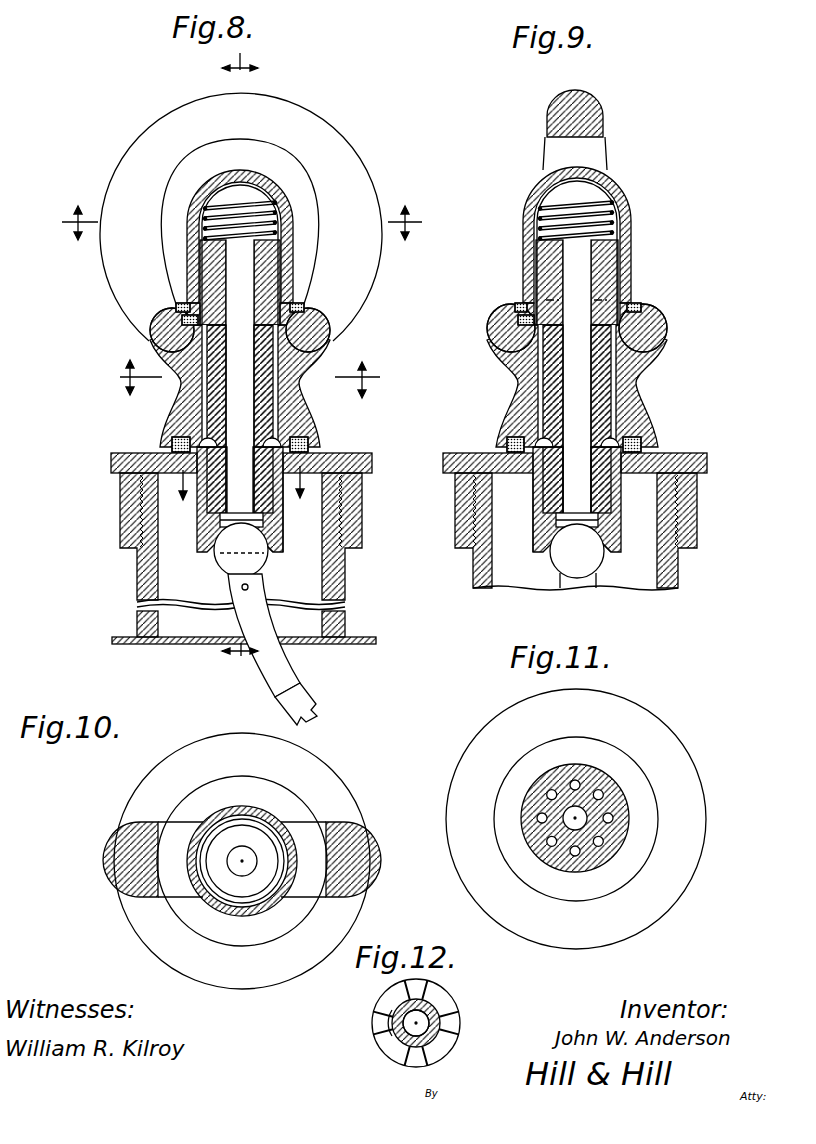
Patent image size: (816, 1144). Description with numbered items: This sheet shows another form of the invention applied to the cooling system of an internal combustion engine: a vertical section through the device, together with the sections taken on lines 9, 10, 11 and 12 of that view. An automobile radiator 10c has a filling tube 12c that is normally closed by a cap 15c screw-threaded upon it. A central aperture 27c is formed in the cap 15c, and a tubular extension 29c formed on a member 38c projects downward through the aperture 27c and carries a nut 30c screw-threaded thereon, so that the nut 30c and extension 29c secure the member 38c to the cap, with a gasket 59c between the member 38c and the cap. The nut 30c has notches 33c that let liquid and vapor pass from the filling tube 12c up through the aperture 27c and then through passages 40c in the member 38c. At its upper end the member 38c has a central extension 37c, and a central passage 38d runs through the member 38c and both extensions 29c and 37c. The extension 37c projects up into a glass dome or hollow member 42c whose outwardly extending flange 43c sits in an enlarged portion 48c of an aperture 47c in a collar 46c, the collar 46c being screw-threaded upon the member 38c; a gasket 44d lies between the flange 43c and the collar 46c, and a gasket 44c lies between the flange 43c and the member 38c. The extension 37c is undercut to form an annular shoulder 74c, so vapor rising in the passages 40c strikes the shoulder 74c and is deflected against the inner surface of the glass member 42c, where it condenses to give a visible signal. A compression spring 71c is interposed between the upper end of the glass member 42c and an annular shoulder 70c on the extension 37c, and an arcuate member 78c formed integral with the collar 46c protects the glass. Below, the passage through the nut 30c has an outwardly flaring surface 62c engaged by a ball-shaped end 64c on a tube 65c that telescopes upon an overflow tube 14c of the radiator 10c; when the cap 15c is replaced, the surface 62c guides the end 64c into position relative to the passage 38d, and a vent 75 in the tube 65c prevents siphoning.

In FIG. 8, the arcuate member 78c is at (198, 108).
In FIG. 9, the arcuate member 78c is at (600, 112).
In FIG. 10, the arcuate member 78c is at (372, 846).
In FIG. 8, the annular shoulder 70c is at (243, 223).
In FIG. 8, the dome or hollow member 42c is at (252, 174).
In FIG. 9, the dome or hollow member 42c is at (620, 192).
In FIG. 10, the dome or hollow member 42c is at (226, 807).
In FIG. 8, the compression spring 71c is at (212, 203).
In FIG. 9, the compression spring 71c is at (535, 200).
In FIG. 10, the compression spring 71c is at (212, 897).
In FIG. 8, the central extension 37c is at (287, 276).
In FIG. 9, the central extension 37c is at (607, 277).
In FIG. 10, the central extension 37c is at (250, 887).
In FIG. 8, the central passage 38d is at (233, 280).
In FIG. 9, the central passage 38d is at (578, 258).
In FIG. 10, the central passage 38d is at (247, 850).
In FIG. 11, the central passage 38d is at (578, 827).
In FIG. 12, the central passage 38d is at (411, 1030).
In FIG. 8, the passages 40c is at (272, 385).
In FIG. 9, the passages 40c is at (607, 382).
In FIG. 11, the passages 40c is at (573, 780).
In FIG. 8, the member 38c is at (170, 418).
In FIG. 9, the member 38c is at (640, 407).
In FIG. 11, the member 38c is at (628, 832).
In FIG. 8, the aperture 47c is at (176, 302).
In FIG. 9, the aperture 47c is at (627, 308).
In FIG. 8, the annular shoulder 74c is at (292, 295).
In FIG. 9, the annular shoulder 74c is at (617, 300).
In FIG. 8, the collar 46c is at (152, 345).
In FIG. 9, the collar 46c is at (493, 312).
In FIG. 10, the collar 46c is at (225, 933).
In FIG. 8, the enlarged portion 48c is at (310, 308).
In FIG. 9, the enlarged portion 48c is at (663, 319).
In FIG. 8, the gasket 44d is at (170, 308).
In FIG. 9, the gasket 44d is at (520, 303).
In FIG. 8, the gasket 44c is at (190, 318).
In FIG. 9, the gasket 44c is at (547, 325).
In FIG. 8, the outwardly extending flange 43c is at (306, 301).
In FIG. 9, the outwardly extending flange 43c is at (650, 310).
In FIG. 8, the cap 15c is at (353, 457).
In FIG. 9, the cap 15c is at (703, 455).
In FIG. 10, the cap 15c is at (340, 790).
In FIG. 11, the cap 15c is at (685, 782).
In FIG. 8, the central aperture 27c is at (207, 463).
In FIG. 9, the central aperture 27c is at (613, 463).
In FIG. 8, the gasket 59c is at (303, 440).
In FIG. 9, the gasket 59c is at (507, 433).
In FIG. 8, the tubular extension 29c is at (217, 500).
In FIG. 9, the tubular extension 29c is at (553, 482).
In FIG. 12, the tubular extension 29c is at (432, 1007).
In FIG. 8, the notches 33c is at (278, 482).
In FIG. 9, the notches 33c is at (547, 507).
In FIG. 12, the notches 33c is at (383, 1020).
In FIG. 8, the nut 30c is at (283, 540).
In FIG. 9, the nut 30c is at (617, 523).
In FIG. 12, the nut 30c is at (447, 1019).
In FIG. 8, the filling tube 12c is at (338, 578).
In FIG. 9, the filling tube 12c is at (680, 574).
In FIG. 8, the automobile radiator 10c is at (363, 637).
In FIG. 8, the outwardly flaring surface 62c is at (213, 552).
In FIG. 9, the outwardly flaring surface 62c is at (605, 550).
In FIG. 8, the ball-shaped end 64c is at (270, 560).
In FIG. 9, the ball-shaped end 64c is at (562, 550).
In FIG. 8, the tube 65c is at (288, 671).
In FIG. 9, the tube 65c is at (577, 580).
In FIG. 8, the overflow tube 14c is at (297, 700).
In FIG. 8, the aperture or vent 75 is at (249, 587).
In FIG. 8, the section line 9— 9 is at (240, 357).
In FIG. 8, the section line 10— 10 is at (243, 223).
In FIG. 8, the section line 11— 11 is at (245, 379).
In FIG. 8, the section line 12— 12 is at (242, 483).